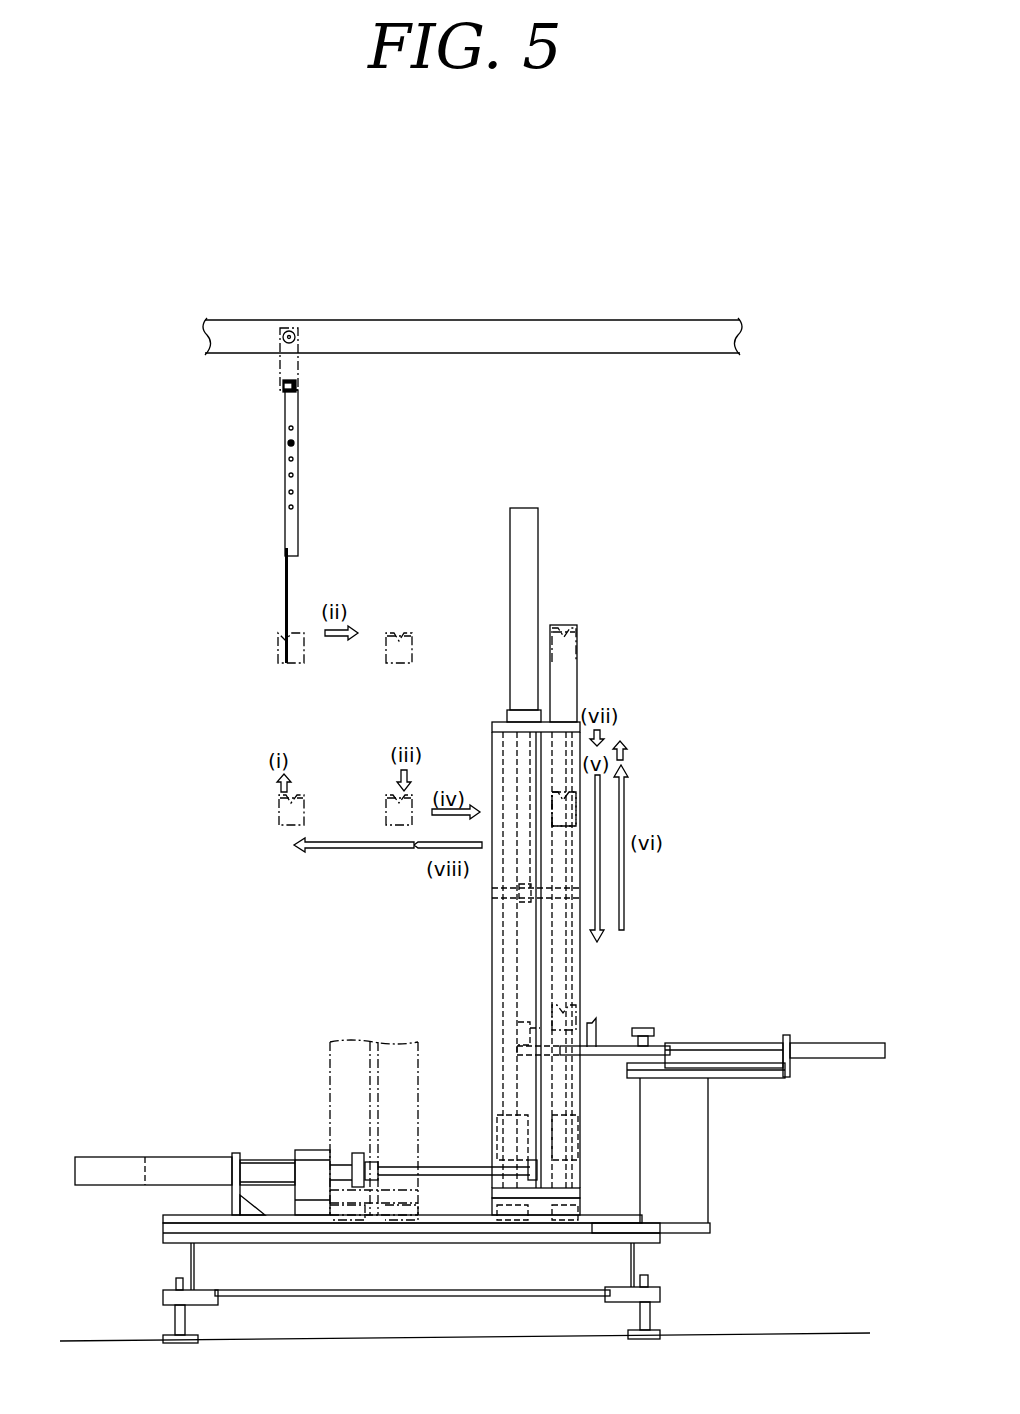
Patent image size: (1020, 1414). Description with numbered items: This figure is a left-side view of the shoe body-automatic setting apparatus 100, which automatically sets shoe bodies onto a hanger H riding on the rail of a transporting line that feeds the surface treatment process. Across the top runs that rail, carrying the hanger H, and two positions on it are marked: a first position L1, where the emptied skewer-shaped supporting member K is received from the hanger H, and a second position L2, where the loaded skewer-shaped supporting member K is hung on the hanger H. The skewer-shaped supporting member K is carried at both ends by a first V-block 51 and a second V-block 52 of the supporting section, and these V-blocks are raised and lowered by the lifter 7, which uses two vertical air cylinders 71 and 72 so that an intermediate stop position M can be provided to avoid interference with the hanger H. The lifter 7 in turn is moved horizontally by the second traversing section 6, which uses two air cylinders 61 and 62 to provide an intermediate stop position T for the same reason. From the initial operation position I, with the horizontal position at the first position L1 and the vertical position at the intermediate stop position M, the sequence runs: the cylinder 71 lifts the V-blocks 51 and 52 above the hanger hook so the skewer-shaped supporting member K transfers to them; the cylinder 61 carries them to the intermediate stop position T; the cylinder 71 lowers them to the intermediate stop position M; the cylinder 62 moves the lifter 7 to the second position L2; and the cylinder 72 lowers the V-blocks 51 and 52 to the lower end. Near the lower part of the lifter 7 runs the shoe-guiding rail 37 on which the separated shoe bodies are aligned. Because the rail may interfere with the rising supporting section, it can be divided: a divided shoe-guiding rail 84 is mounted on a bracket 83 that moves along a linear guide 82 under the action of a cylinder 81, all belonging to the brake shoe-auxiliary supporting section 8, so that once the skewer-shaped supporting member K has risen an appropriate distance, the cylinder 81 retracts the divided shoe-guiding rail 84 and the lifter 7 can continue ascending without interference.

The shoe body-automatic setting apparatus 100 is at (566, 864).
The lifter 7 is at (563, 864).
The vertical air cylinder 71 is at (518, 524).
The vertical air cylinder 72 is at (578, 683).
The second V-block 52 is at (278, 653).
The first V-block 51 is at (564, 809).
The shoe-guiding rail 37 is at (516, 1028).
The divided shoe-guiding rail 84 is at (592, 1020).
The bracket 83 is at (612, 1046).
The brake shoe-auxiliary supporting section 8 is at (701, 1091).
The cylinder 81 is at (841, 1045).
The linear guide 82 is at (748, 1070).
The second traversing section 6 is at (306, 1143).
The air cylinder 61 is at (170, 1165).
The air cylinder 62 is at (262, 1162).
The hanger H is at (285, 586).
The skewer-shaped supporting member K is at (401, 638).
The intermediate stop position T is at (401, 638).
The initial operation position I is at (293, 778).
The intermediate stop position M is at (397, 797).
The first position L1 is at (288, 372).
The second position L2 is at (560, 362).